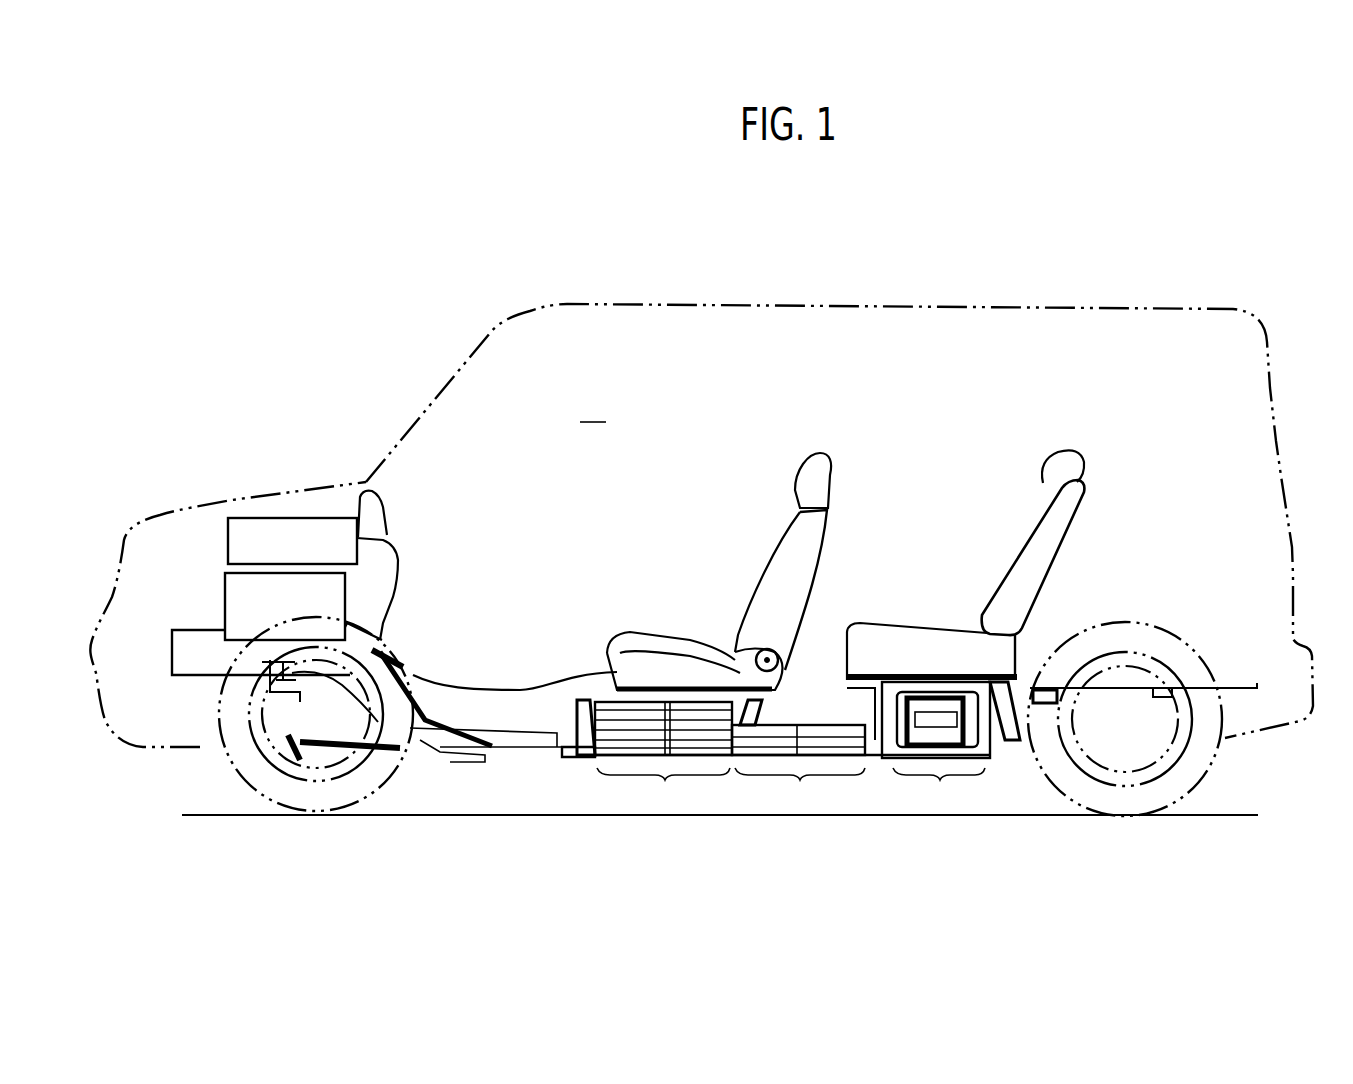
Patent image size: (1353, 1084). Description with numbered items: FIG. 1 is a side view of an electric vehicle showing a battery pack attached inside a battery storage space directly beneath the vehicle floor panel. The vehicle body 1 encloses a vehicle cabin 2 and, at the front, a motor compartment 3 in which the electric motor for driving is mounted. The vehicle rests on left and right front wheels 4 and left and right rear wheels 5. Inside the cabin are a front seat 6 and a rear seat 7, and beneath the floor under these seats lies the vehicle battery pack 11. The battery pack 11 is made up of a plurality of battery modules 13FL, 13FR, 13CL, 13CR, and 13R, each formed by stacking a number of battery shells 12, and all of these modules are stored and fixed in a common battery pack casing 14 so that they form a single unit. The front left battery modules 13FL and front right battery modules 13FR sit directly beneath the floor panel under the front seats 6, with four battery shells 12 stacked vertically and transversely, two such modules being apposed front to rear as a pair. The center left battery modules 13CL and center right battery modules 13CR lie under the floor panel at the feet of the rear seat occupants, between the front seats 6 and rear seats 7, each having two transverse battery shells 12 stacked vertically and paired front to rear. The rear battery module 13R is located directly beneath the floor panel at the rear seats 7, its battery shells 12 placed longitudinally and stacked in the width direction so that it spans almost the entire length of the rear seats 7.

The vehicle body 1 is at (1136, 299).
The vehicle cabin 2 is at (593, 409).
The motor compartment 3 is at (168, 590).
The front wheels 4 is at (272, 800).
The rear wheels 5 is at (1183, 800).
The front seat 6 is at (762, 557).
The rear seat 7 is at (1018, 530).
The vehicle battery pack 11 is at (590, 757).
The battery shell 12 is at (612, 697).
The front left battery module 13FL is at (663, 755).
The front right battery module 13FR is at (663, 755).
The center left battery module 13CL is at (802, 767).
The center right battery module 13CR is at (802, 767).
The rear battery module 13R is at (936, 745).
The battery pack casing 14 is at (859, 644).